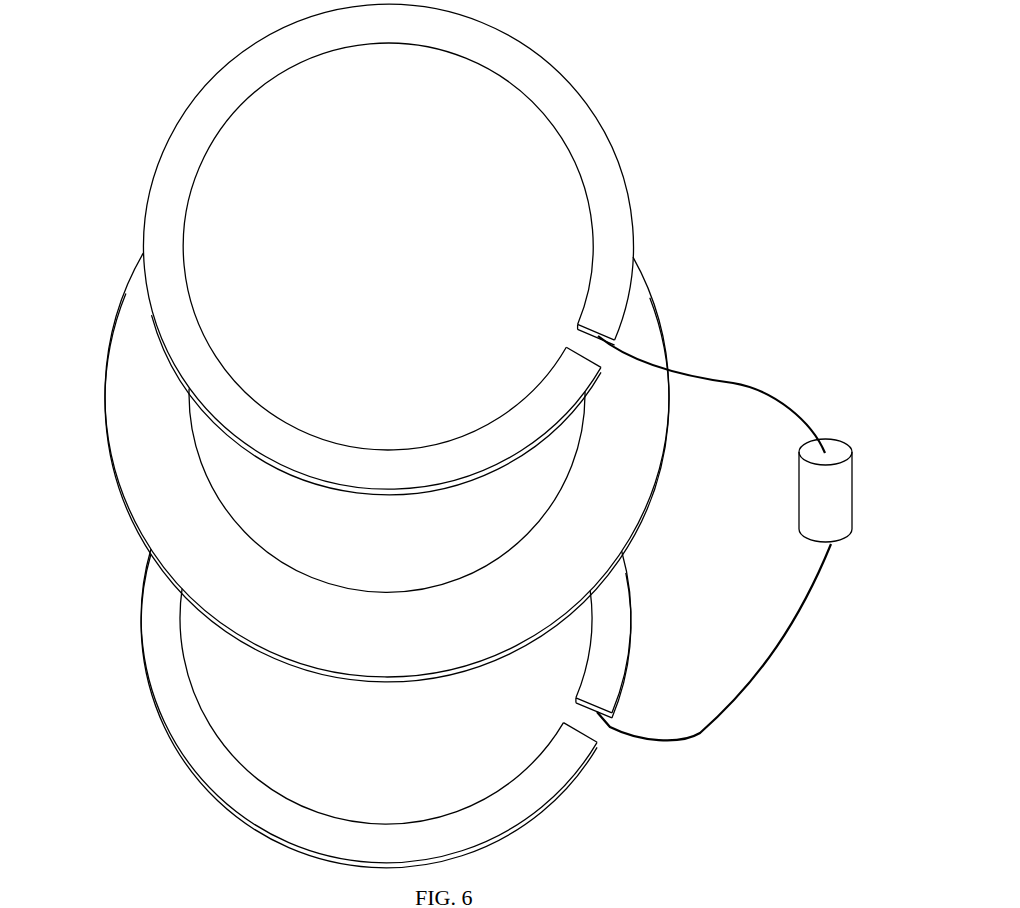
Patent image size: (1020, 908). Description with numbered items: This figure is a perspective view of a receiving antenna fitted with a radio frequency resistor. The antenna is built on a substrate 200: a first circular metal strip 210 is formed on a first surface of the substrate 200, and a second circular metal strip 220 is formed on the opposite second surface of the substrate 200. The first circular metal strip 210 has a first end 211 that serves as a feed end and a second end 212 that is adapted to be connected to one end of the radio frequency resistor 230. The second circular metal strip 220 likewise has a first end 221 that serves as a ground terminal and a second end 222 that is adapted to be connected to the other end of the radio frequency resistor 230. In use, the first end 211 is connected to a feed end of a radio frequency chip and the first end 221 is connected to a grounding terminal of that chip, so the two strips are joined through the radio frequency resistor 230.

The substrate 200 is at (142, 447).
The first circular metal strip 210 is at (602, 153).
The first end of the first circular metal strip 211 is at (600, 367).
The second end of the first circular metal strip 212 is at (593, 332).
The second circular metal strip 220 is at (237, 797).
The first end of the second circular metal strip 221 is at (575, 733).
The second end of the second circular metal strip 222 is at (572, 702).
The radio frequency resistor 230 is at (808, 497).